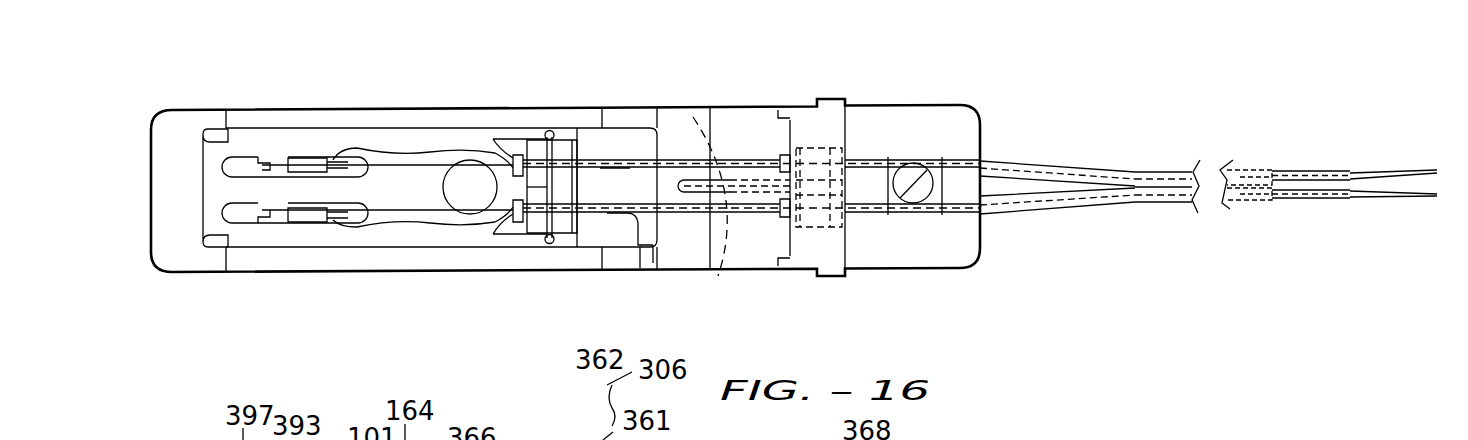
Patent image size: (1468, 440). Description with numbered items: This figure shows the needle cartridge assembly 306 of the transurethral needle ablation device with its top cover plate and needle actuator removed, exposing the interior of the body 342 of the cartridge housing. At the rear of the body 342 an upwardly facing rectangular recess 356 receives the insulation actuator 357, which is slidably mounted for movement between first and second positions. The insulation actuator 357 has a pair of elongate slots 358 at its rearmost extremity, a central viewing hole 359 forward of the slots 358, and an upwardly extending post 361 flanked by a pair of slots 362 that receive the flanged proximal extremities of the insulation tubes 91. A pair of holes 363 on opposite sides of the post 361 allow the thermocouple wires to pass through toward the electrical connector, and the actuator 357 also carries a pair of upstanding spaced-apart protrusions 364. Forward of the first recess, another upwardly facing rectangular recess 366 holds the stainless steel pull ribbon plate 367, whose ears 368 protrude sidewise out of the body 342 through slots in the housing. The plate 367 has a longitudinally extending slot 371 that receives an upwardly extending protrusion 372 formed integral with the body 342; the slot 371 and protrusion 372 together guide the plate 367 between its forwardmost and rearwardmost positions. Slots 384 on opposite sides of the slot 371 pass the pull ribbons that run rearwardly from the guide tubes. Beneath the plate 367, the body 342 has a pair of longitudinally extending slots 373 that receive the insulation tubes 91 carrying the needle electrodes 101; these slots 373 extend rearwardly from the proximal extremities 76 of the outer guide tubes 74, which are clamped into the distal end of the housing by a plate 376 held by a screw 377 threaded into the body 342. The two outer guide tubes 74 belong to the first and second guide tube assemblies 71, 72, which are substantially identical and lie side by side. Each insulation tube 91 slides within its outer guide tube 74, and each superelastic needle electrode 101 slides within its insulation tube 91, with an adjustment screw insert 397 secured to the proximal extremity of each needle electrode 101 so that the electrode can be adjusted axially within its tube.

The needle cartridge assembly 306 is at (630, 80).
The body 342 is at (365, 300).
The upwardly facing rectangular recess 356 is at (406, 128).
The insulation actuator 357 is at (423, 137).
The elongate slots 358 is at (255, 156).
The central viewing hole 359 is at (475, 252).
The post 361 is at (538, 183).
The slots 362 is at (595, 128).
The holes 363 is at (540, 160).
The upstanding spaced-apart protrusions 364 is at (187, 188).
The upwardly facing rectangular recess 366 is at (638, 112).
The pull ribbon plate 367 is at (795, 106).
The ears 368 is at (835, 99).
The longitudinally extending slot 371 is at (734, 209).
The upwardly extending protrusion 372 is at (694, 116).
The longitudinally extending slots 373 is at (638, 246).
The plate 376 is at (940, 176).
The screw 377 is at (922, 202).
The slots 384 is at (726, 118).
The adjustment screw insert 397 is at (277, 165).
The proximal extremity 76 is at (1058, 165).
The outer guide tube 74 is at (1108, 176).
The second guide tube assembly 72 is at (1164, 172).
The first guide tube assembly 71 is at (1160, 205).
The insulation tube 91 is at (1298, 172).
The needle electrode 101 is at (1418, 168).